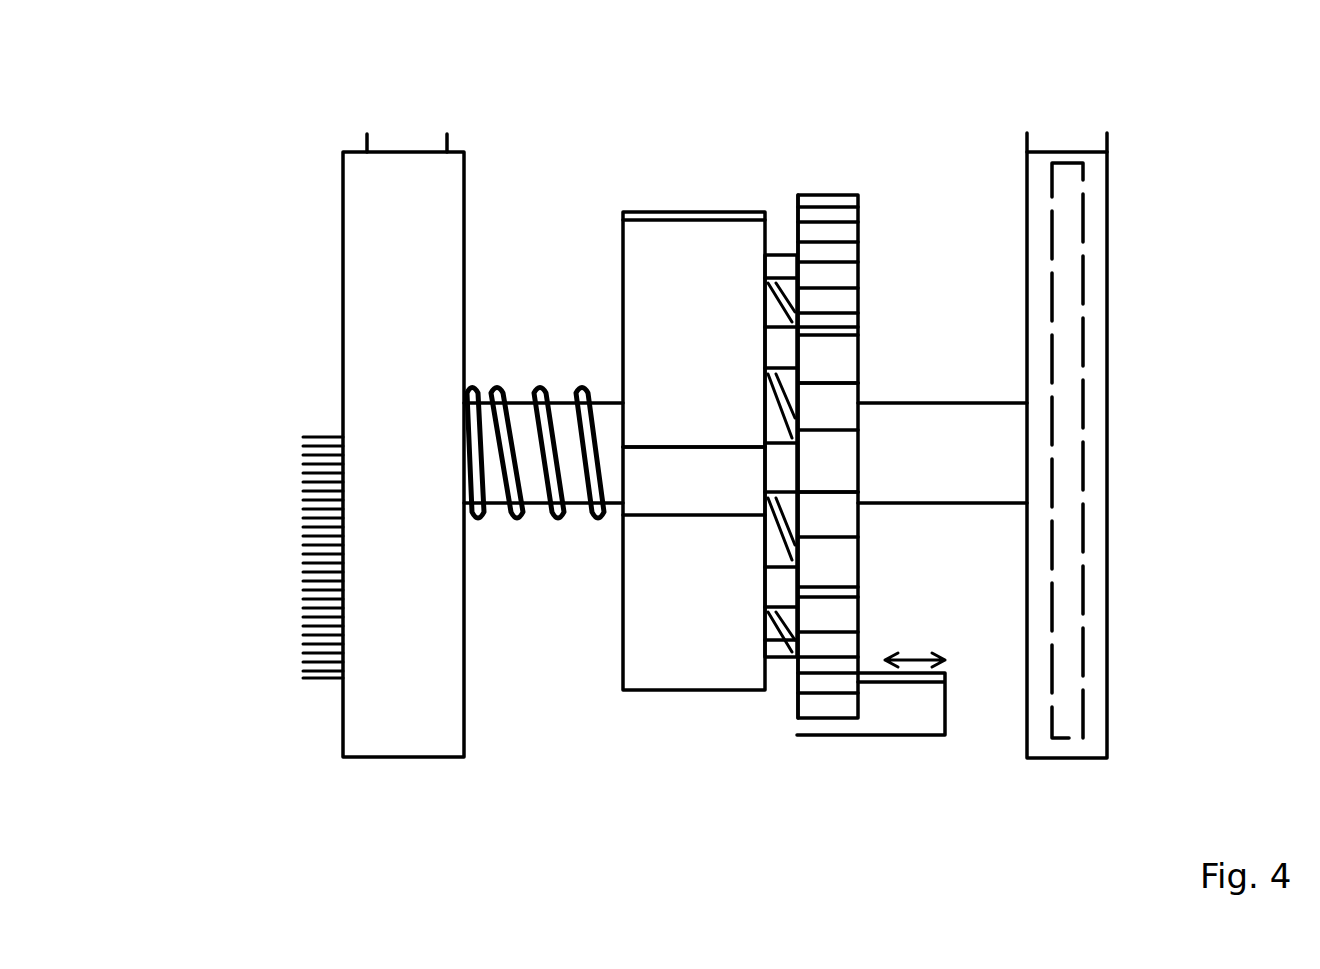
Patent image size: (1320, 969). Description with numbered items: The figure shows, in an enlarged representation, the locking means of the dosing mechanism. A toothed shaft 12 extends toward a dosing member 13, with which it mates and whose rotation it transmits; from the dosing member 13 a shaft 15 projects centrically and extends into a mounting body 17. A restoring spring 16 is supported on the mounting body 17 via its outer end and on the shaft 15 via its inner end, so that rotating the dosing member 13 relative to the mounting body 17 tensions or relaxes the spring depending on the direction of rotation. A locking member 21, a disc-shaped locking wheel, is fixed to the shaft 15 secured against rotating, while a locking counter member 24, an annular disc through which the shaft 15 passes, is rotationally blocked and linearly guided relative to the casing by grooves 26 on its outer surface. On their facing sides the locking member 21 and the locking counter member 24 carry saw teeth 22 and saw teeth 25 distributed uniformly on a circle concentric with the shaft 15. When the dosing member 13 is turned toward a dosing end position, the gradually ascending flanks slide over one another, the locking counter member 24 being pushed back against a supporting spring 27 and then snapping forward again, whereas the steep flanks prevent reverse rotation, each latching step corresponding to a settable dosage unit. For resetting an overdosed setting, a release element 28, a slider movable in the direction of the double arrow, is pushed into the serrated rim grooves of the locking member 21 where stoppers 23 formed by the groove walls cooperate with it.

The shaft 12 is at (303, 447).
The dosing member 13 is at (373, 732).
The shaft 15 is at (530, 480).
The restoring spring 16 is at (1082, 215).
The mounting body 17 is at (1100, 272).
The locking member 21 is at (848, 208).
The saw teeth 22 is at (792, 270).
The stoppers 23 is at (836, 480).
The locking counter member 24 is at (643, 225).
The saw teeth 25 is at (765, 300).
The grooves 26 is at (690, 470).
The supporting spring 27 is at (540, 385).
The release element 28 is at (895, 710).